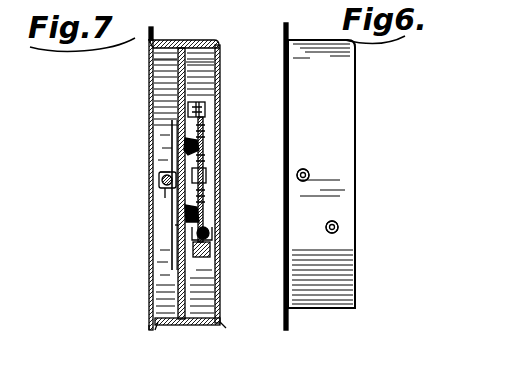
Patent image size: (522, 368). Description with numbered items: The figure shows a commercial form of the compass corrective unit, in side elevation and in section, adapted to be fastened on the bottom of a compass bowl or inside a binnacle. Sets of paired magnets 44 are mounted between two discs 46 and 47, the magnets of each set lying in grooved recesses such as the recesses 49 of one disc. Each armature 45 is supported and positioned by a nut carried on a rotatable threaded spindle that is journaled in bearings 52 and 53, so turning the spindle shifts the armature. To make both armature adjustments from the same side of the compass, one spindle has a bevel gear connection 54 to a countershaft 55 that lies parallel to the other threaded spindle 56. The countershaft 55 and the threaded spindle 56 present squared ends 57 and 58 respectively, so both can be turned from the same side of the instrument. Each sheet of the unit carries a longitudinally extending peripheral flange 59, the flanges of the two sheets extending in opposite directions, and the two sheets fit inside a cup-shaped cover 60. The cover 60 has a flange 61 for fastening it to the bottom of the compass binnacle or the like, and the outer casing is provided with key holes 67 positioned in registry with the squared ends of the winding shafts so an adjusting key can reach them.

In FIG. 7, the paired magnets 44 is at (200, 130).
In FIG. 7, the armature 45 is at (177, 216).
In FIG. 7, the disc 46 is at (176, 59).
In FIG. 7, the disc 47 is at (190, 60).
In FIG. 7, the grooved recesses 49 is at (194, 146).
In FIG. 7, the bearing 52 is at (205, 108).
In FIG. 7, the bearing 53 is at (211, 250).
In FIG. 7, the bevel gear connection 54 is at (212, 232).
In FIG. 7, the countershaft 55 is at (180, 236).
In FIG. 7, the threaded spindle 56 is at (178, 190).
In FIG. 6, the squared end 57 is at (338, 227).
In FIG. 6, the squared end 58 is at (308, 174).
In FIG. 7, the peripheral flange 59 is at (172, 326).
In FIG. 7, the cup-shaped cover 60 is at (221, 283).
In FIG. 6, the cup-shaped cover 60 is at (328, 300).
In FIG. 7, the flange 61 is at (155, 31).
In FIG. 6, the flange 61 is at (300, 300).
In FIG. 6, the key holes 67 is at (308, 170).